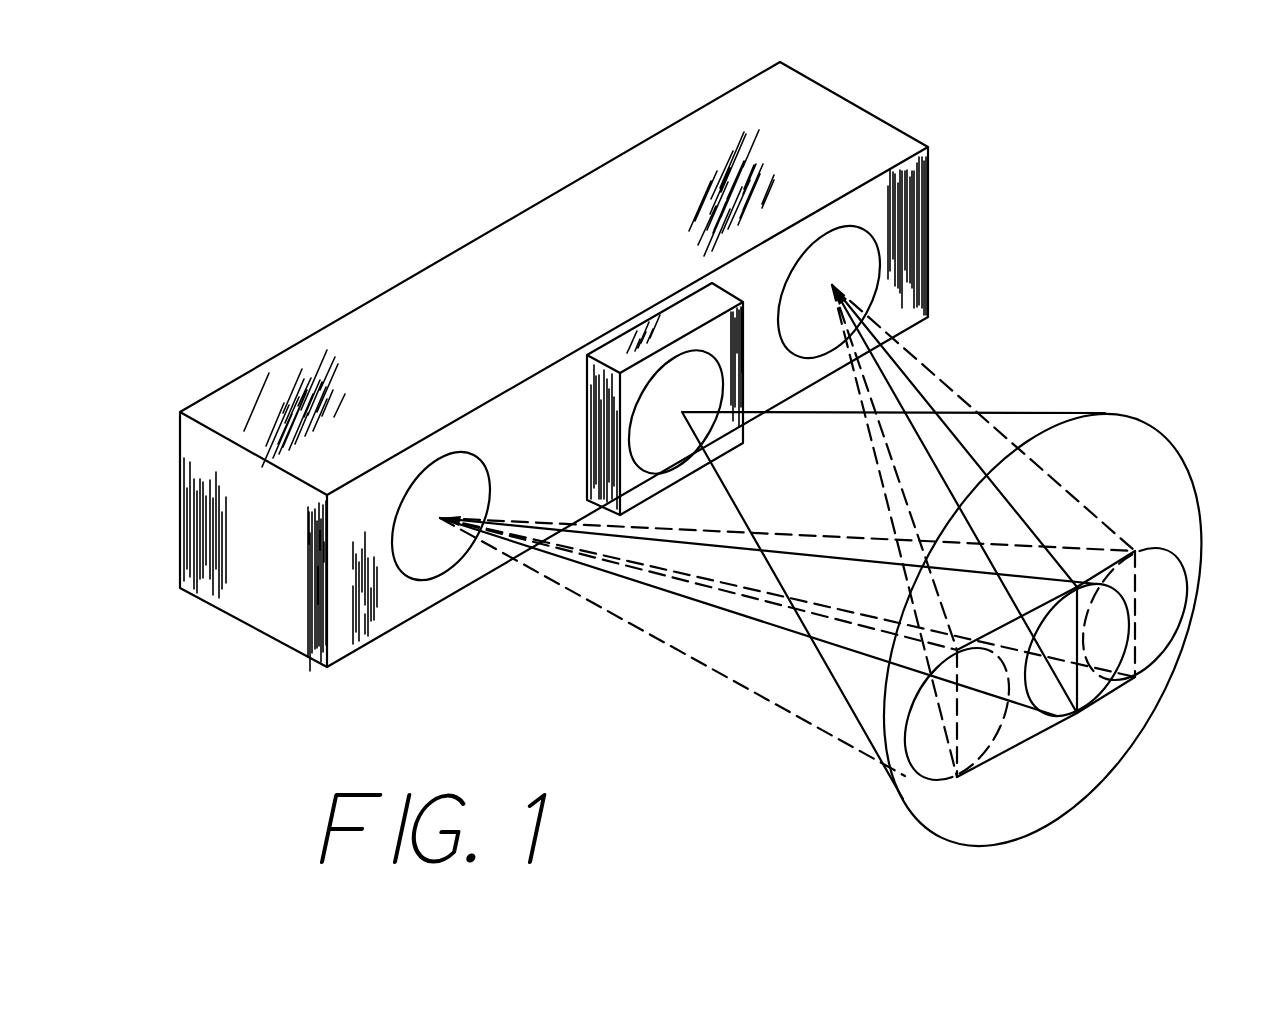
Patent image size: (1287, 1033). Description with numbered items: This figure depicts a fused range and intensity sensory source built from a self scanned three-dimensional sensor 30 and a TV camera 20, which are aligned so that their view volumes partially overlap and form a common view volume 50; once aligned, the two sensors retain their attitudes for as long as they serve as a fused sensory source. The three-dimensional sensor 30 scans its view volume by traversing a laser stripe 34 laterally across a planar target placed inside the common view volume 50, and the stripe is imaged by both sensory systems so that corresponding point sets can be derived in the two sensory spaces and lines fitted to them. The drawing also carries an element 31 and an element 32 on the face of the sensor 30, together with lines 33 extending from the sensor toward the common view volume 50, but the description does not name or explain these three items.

The self scanned three dimensional sensor 30 is at (843, 127).
The illuminator I 31 is at (877, 273).
The detector D 32 is at (443, 560).
The TV camera 20 is at (595, 393).
The illumination beam 33 is at (903, 395).
The laser stripe 34 is at (1103, 700).
The common view volume 50 is at (1172, 602).